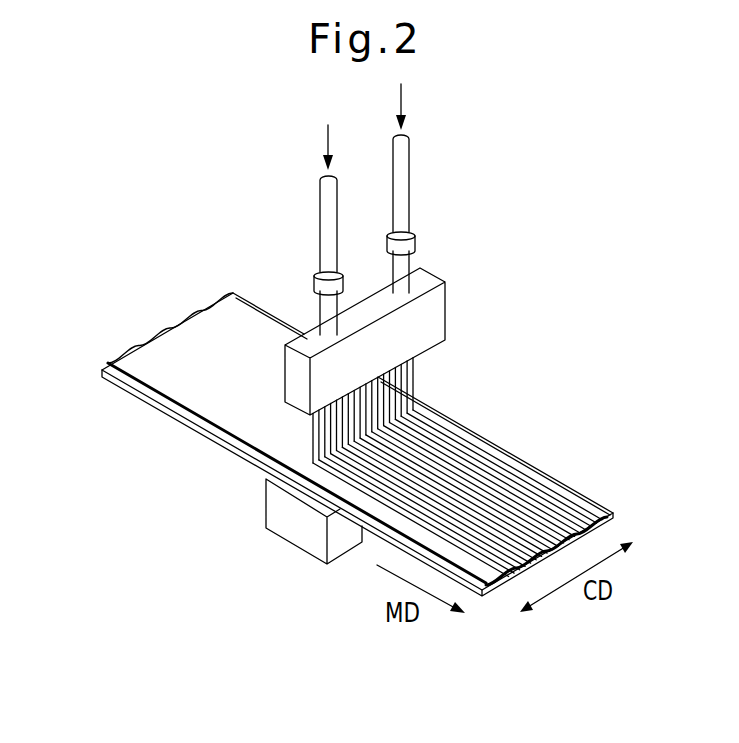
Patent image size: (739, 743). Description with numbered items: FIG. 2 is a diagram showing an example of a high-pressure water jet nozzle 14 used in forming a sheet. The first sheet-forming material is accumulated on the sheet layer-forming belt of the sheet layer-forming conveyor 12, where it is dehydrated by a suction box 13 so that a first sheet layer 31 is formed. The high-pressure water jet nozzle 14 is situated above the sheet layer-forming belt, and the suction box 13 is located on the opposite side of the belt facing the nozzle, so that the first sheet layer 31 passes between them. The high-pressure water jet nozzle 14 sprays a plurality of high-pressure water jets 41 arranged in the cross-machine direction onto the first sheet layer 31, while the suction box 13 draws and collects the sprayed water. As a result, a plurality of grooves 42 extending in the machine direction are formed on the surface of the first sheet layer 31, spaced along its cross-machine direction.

The sheet layer-forming conveyor 12 is at (147, 402).
The suction box 13 is at (290, 513).
The high-pressure water jet nozzle 14 is at (462, 291).
The first sheet layer 31 is at (523, 470).
The high-pressure water jet 41 is at (413, 373).
The groove 42 is at (567, 507).